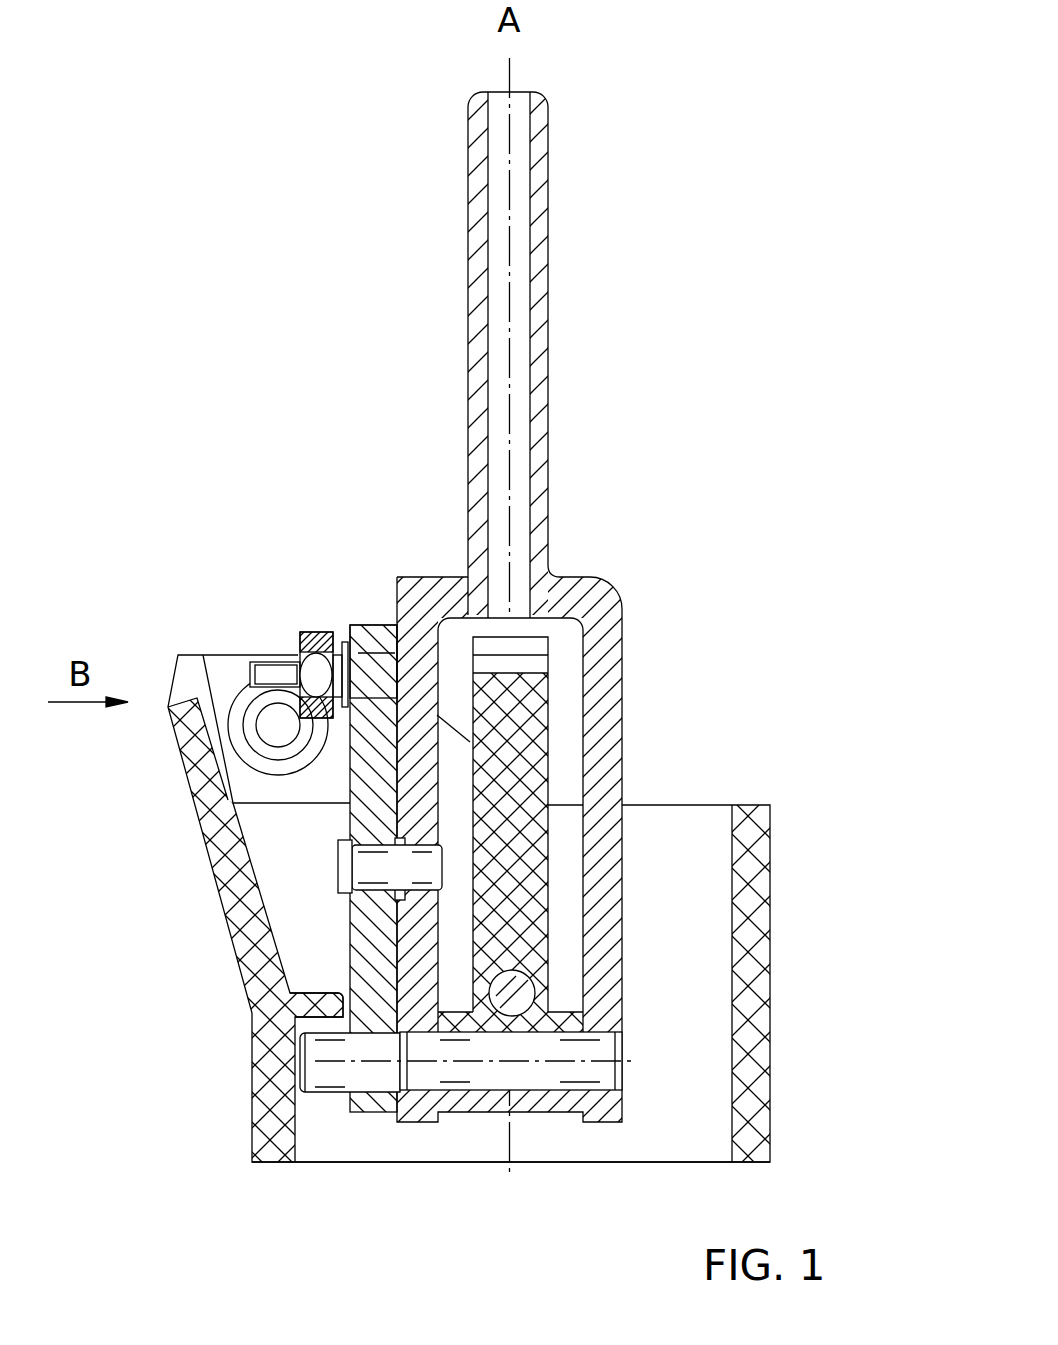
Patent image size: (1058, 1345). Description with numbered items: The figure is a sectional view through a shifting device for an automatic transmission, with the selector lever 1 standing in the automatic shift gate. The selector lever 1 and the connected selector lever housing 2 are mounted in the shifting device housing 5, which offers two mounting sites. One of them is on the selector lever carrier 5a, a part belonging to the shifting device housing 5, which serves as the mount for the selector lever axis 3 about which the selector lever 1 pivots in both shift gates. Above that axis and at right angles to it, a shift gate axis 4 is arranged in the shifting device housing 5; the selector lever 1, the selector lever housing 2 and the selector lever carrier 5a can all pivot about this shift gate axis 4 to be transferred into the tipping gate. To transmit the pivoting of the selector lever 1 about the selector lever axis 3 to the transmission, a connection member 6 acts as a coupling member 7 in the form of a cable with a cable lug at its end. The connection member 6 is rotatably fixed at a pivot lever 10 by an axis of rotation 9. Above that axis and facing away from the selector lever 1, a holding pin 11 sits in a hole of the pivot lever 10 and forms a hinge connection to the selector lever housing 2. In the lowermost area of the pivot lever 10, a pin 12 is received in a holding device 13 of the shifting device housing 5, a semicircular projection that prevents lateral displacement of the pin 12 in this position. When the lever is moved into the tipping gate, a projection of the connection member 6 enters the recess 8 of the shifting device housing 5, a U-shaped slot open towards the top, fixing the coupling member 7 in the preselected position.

The selector lever 1 is at (535, 412).
The selector lever housing 2 is at (610, 690).
The selector lever axis 3 is at (605, 1070).
The shift gate axis 4 is at (517, 990).
The shifting device housing 5 is at (758, 860).
The selector lever carrier 5a is at (520, 780).
The connection member 6 is at (308, 628).
The coupling member 7 is at (260, 710).
The recess 8 is at (182, 735).
The axis of rotation 9 is at (377, 667).
The pivot lever 10 is at (362, 780).
The holding pin 11 is at (363, 868).
The pin 12 is at (330, 1080).
The holding device 13 is at (307, 1027).